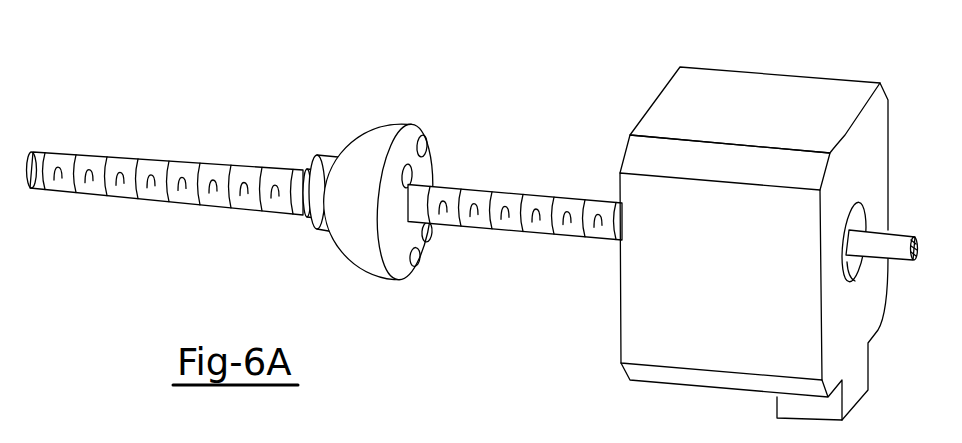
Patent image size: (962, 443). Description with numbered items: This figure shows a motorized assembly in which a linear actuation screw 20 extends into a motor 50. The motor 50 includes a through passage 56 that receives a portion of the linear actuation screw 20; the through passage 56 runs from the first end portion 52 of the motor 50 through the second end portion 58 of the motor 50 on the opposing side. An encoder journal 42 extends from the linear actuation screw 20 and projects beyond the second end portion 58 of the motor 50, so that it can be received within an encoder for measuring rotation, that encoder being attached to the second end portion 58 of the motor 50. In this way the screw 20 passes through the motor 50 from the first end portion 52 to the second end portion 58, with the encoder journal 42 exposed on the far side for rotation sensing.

The linear actuation screw 20 is at (120, 158).
The encoder journal 42 is at (900, 254).
The motor 50 is at (771, 215).
The first end portion 52 is at (670, 80).
The through passage 56 is at (853, 218).
The second end portion 58 is at (875, 120).